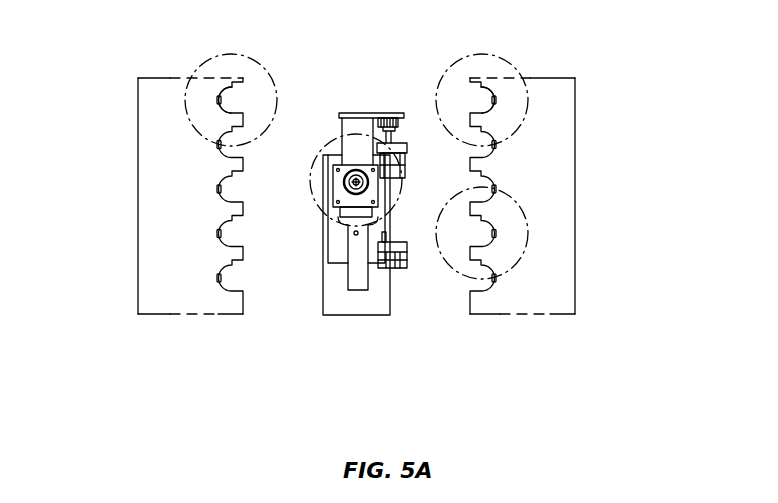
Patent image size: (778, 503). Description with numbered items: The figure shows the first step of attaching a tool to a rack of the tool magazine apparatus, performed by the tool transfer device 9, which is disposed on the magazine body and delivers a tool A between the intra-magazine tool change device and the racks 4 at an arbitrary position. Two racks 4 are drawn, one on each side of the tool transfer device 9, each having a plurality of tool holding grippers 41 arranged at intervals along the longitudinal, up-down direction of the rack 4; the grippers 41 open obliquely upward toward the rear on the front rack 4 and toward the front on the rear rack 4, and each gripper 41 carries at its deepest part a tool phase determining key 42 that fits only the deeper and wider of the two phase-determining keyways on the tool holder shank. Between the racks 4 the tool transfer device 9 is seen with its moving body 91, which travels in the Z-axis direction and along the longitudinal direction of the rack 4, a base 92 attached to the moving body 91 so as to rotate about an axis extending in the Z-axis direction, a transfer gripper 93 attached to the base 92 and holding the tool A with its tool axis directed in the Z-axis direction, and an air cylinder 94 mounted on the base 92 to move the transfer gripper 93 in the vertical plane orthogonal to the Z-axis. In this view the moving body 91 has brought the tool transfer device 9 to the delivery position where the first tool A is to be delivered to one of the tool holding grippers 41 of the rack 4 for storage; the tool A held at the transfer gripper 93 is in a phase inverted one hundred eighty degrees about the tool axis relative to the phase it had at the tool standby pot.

The rack 4 is at (150, 152).
The tool holding gripper 41 is at (230, 112).
The tool phase determining key 42 is at (222, 95).
The tool transfer device 9 is at (375, 228).
The moving body 91 is at (376, 305).
The base 92 is at (337, 258).
The transfer gripper 93 is at (338, 165).
The air cylinder 94 is at (390, 220).
The tool A is at (320, 207).